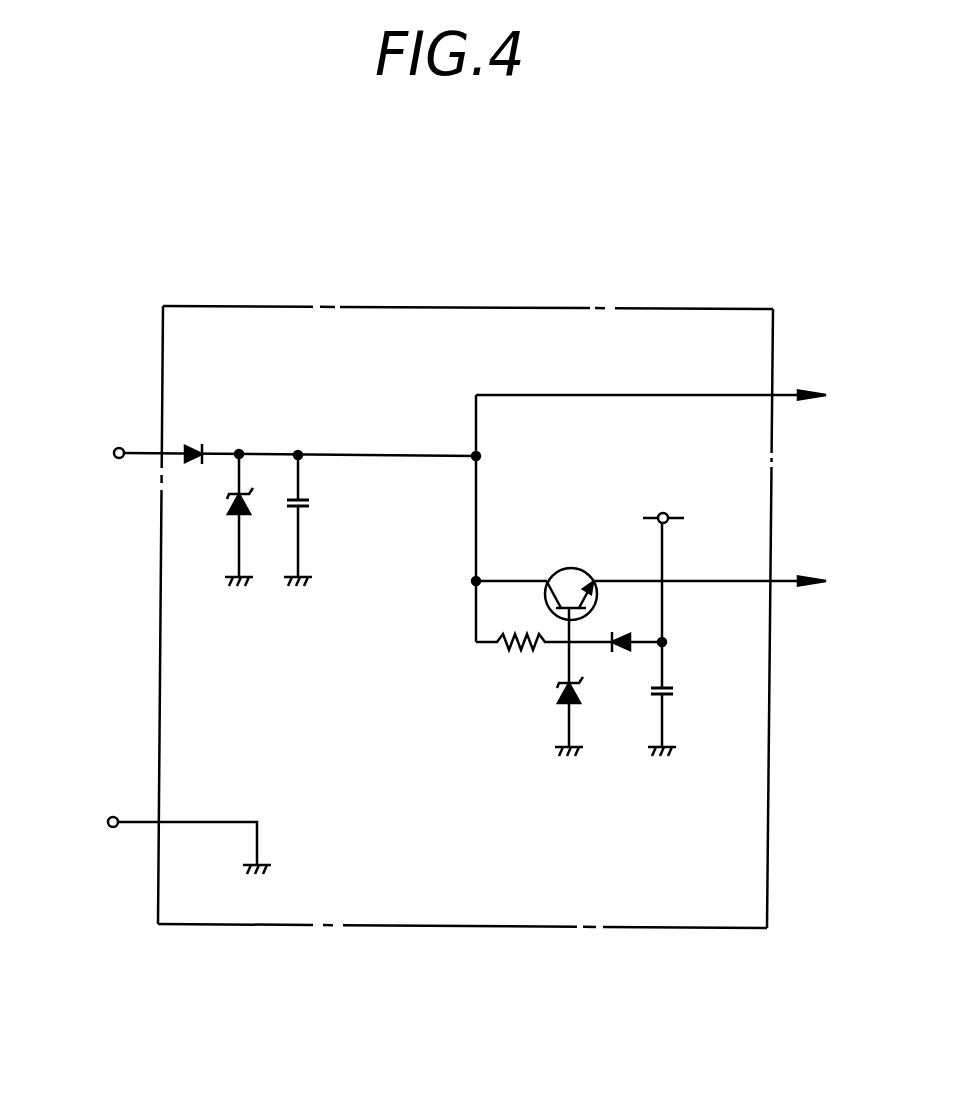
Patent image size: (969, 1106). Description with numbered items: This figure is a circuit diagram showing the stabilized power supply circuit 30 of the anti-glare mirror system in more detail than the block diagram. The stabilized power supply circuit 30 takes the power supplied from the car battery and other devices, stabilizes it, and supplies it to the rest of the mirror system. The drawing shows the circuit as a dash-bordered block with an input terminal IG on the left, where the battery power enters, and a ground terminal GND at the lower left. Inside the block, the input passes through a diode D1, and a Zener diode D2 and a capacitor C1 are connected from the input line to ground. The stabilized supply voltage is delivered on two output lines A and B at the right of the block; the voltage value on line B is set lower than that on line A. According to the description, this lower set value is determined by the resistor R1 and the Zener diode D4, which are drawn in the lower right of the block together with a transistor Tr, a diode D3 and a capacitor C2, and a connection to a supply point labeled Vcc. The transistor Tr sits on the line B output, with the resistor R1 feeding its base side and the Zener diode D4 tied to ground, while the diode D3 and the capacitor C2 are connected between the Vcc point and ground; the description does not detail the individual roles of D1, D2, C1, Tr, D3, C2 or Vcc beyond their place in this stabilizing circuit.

The stabilized power supply circuit 30 is at (461, 306).
The diode D1 is at (196, 430).
The zener diode D2 is at (220, 520).
The capacitor C1 is at (314, 520).
The transistor Tr is at (571, 584).
The resistor R1 is at (544, 622).
The diode D3 is at (634, 660).
The Zener diode D4 is at (547, 715).
The capacitor C2 is at (681, 715).
The supply voltage terminal Vcc is at (690, 505).
The supply voltage line A is at (671, 398).
The supply voltage line B is at (665, 586).
The ignition switch input terminal IG is at (121, 453).
The ground terminal GND is at (150, 837).